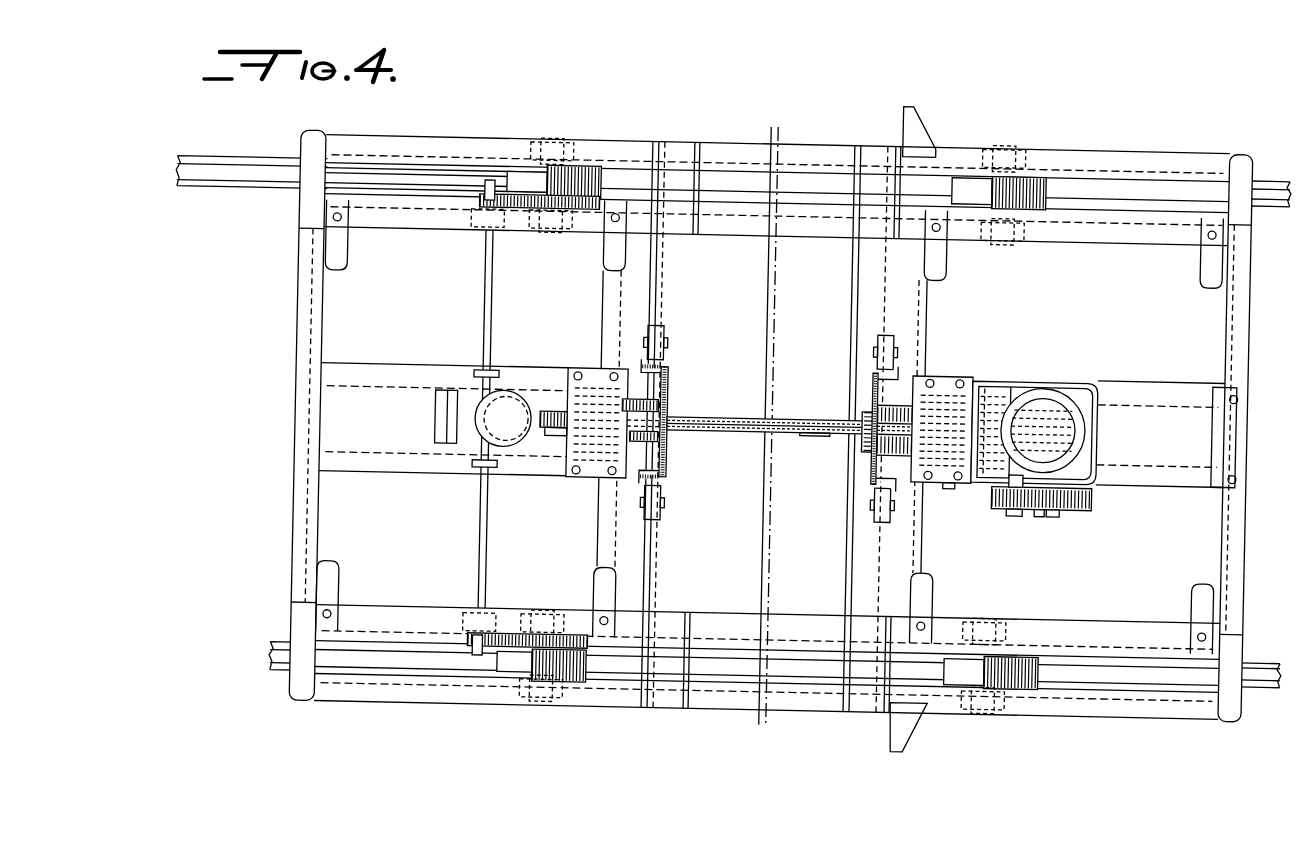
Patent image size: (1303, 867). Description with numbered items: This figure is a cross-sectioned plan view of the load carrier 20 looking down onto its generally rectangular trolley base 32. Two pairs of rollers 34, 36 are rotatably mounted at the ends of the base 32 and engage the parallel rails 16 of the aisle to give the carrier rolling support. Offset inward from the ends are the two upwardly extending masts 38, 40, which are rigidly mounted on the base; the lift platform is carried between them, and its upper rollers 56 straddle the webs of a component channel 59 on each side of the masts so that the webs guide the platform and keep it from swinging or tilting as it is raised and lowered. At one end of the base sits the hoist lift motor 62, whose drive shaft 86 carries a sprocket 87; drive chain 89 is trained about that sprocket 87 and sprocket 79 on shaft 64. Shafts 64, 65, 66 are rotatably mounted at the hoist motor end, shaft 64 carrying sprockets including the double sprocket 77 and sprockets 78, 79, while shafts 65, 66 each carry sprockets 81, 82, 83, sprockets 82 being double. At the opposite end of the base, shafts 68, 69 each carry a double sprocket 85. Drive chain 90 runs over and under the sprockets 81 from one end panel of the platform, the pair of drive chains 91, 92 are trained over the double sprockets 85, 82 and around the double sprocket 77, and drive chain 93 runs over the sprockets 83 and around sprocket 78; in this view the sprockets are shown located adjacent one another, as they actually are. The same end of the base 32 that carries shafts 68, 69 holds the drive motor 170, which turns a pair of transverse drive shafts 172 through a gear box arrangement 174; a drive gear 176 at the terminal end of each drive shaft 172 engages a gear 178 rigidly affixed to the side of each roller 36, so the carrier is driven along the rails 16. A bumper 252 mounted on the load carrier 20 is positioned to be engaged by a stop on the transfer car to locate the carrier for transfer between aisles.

The parallel rails 16 is at (1266, 188).
The load carrier 20 is at (1255, 500).
The trolley base 32 is at (728, 598).
The rollers 34 is at (1015, 175).
The rollers 36 is at (568, 172).
The mast 38 is at (940, 480).
The mast 40 is at (587, 482).
The upper rollers 56 is at (655, 328).
The component channel 59 is at (666, 372).
The hoist lift motor 62 is at (1042, 394).
The shaft 64 is at (1058, 511).
The shaft 65 is at (913, 498).
The shaft 66 is at (873, 480).
The shaft 68 is at (666, 450).
The shaft 69 is at (564, 440).
The double sprocket 77 is at (1090, 424).
The sprocket 78 is at (1094, 457).
The sprocket 79 is at (1093, 496).
The sprocket 81 is at (876, 402).
The double sprocket 82 is at (866, 440).
The sprocket 83 is at (876, 458).
The double sprocket 85 is at (552, 416).
The drive shaft 86 is at (1013, 511).
The sprocket 87 is at (1000, 490).
The drive chain 89 is at (1041, 511).
The drive chain 90 is at (981, 385).
The drive chain 91 is at (803, 419).
The drive chain 92 is at (813, 435).
The drive chain 93 is at (952, 480).
The drive motor 170 is at (501, 452).
The transverse drive shafts 172 is at (490, 300).
The gear box arrangement 174 is at (452, 427).
The drive gear 176 is at (480, 201).
The gear 178 is at (520, 214).
The bumper 252 is at (897, 112).